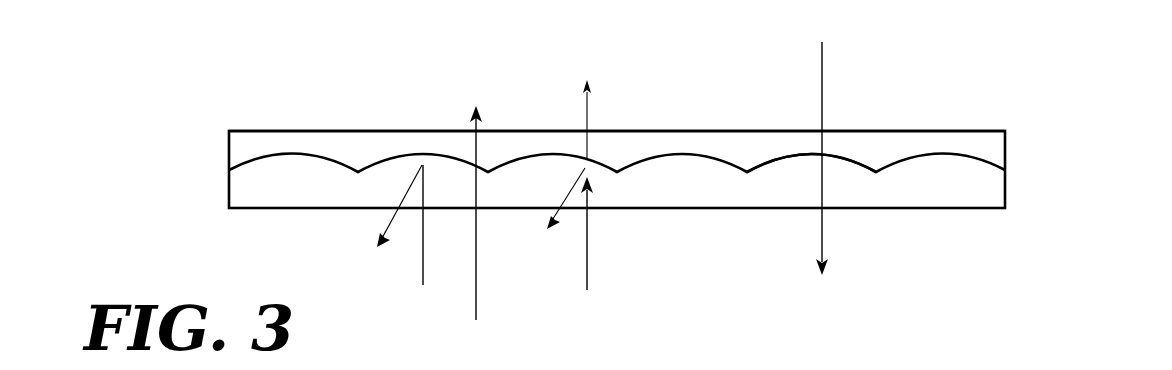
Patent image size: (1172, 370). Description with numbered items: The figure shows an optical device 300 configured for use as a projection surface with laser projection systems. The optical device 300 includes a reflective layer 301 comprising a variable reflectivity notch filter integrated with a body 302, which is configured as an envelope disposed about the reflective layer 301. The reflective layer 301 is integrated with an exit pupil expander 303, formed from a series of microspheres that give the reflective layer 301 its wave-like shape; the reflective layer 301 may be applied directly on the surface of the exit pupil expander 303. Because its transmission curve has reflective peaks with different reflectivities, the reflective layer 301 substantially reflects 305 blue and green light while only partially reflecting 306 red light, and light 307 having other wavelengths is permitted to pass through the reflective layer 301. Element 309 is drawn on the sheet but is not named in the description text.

The optical device 300 is at (1042, 170).
The reflective layer 301 is at (682, 158).
The body 302 is at (289, 130).
The exit pupil expander 303 is at (542, 140).
The substantially reflecting 305 is at (421, 140).
The partially reflecting 306 is at (587, 158).
The light 307 is at (822, 72).
The lens element 309 is at (823, 158).